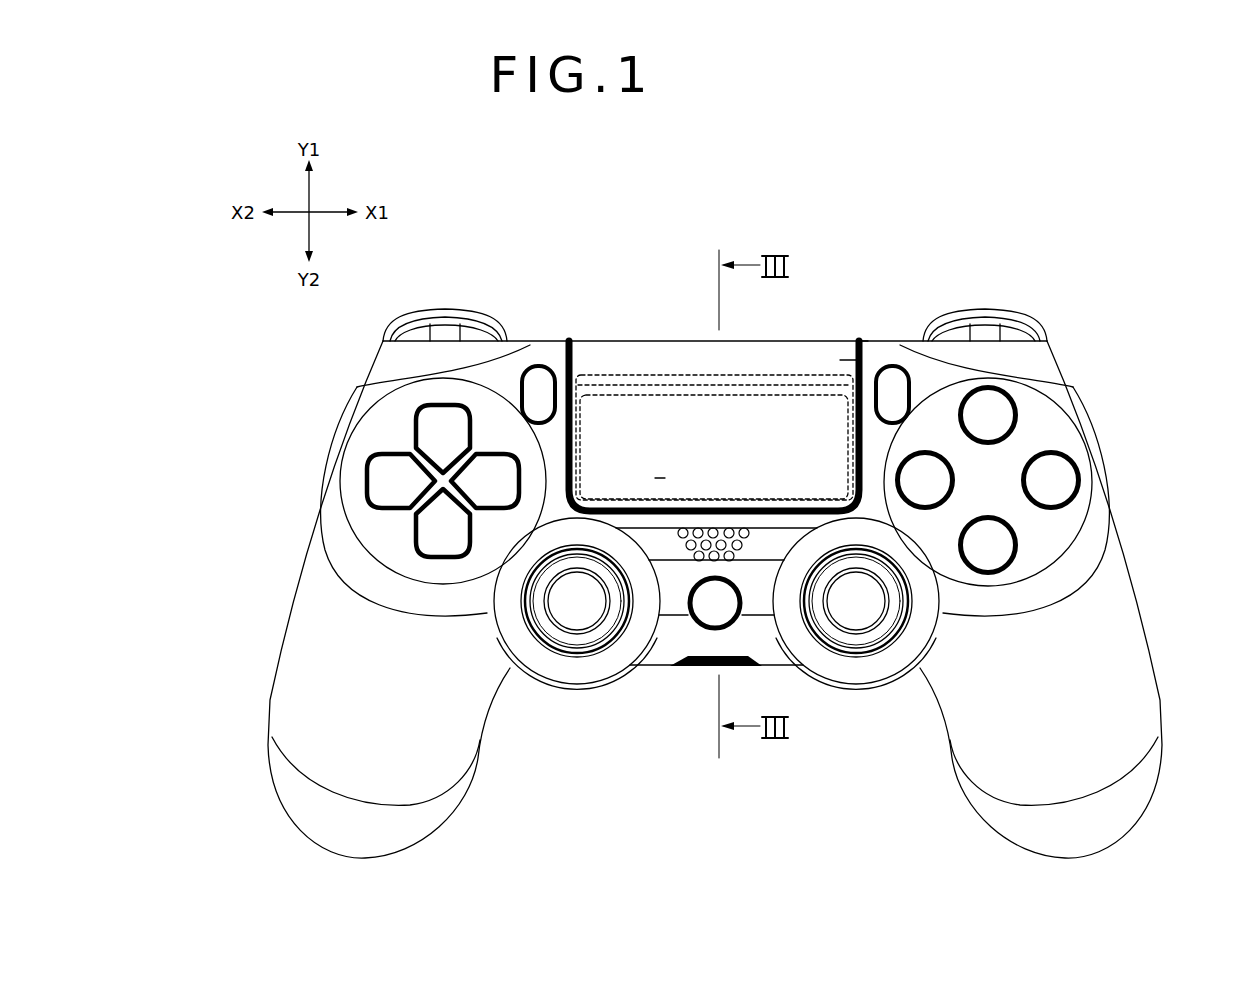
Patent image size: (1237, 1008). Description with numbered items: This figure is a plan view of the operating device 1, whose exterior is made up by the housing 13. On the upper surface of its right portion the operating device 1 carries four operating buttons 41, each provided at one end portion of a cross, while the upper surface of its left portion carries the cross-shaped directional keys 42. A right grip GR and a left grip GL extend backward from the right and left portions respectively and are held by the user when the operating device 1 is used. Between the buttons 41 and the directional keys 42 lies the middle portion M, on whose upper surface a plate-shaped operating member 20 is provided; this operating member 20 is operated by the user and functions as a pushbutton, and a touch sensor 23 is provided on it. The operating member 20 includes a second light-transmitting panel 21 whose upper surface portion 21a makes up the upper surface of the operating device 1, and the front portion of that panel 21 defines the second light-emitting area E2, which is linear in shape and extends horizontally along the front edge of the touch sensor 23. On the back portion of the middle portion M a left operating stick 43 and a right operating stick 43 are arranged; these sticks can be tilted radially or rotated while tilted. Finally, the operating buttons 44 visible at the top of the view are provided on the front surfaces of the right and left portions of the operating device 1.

The operating device 1 is at (996, 180).
The housing 13 is at (1112, 512).
The operating member 20 is at (590, 340).
The second light-transmitting panel 21 is at (677, 341).
The upper surface portion 21a is at (660, 482).
The touch sensor 23 is at (751, 395).
The second light-emitting area E2 is at (810, 360).
The middle portion M is at (857, 340).
The operating buttons 41 is at (1000, 415).
The directional keys 42 is at (372, 461).
The operating sticks 43 is at (584, 642).
The operating button 44 is at (443, 312).
The left grip GL is at (457, 743).
The right grip GR is at (977, 743).